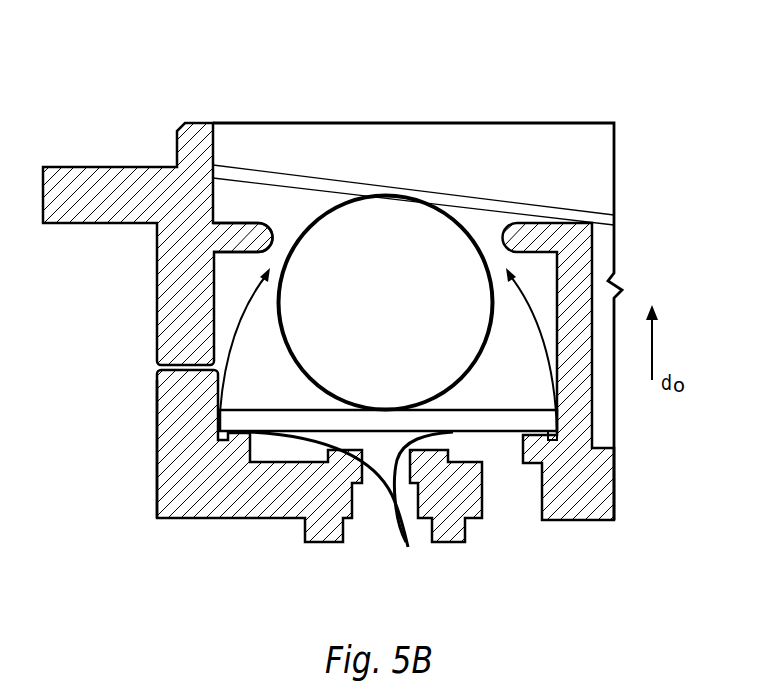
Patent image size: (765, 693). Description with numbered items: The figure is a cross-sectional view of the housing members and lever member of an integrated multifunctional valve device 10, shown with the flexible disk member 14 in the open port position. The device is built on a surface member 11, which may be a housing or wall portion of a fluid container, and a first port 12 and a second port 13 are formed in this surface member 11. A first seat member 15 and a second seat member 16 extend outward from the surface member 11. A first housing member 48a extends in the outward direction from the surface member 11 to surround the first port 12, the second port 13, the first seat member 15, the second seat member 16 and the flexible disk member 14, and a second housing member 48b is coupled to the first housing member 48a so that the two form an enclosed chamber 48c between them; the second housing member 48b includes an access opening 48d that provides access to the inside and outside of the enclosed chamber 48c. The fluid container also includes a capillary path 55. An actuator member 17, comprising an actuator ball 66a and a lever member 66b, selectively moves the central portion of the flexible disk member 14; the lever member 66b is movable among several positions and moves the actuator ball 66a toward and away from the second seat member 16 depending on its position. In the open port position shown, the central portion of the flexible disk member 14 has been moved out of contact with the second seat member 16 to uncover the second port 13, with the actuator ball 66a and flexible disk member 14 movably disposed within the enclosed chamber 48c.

The integrated multifunctional valve device 10 is at (394, 41).
The surface member 11 is at (289, 549).
The first port 12 is at (508, 512).
The second port 13 is at (382, 537).
The flexible disk member 14 is at (257, 410).
The first seat member 15 is at (537, 442).
The second seat member 16 is at (373, 505).
The actuator member 17 is at (463, 212).
The first housing member 48a is at (157, 442).
The second housing member 48b is at (157, 321).
The enclosed chamber 48c is at (237, 292).
The access opening 48d is at (487, 237).
The capillary path 55 is at (405, 537).
The actuator ball 66a is at (397, 238).
The lever member 66b is at (313, 177).